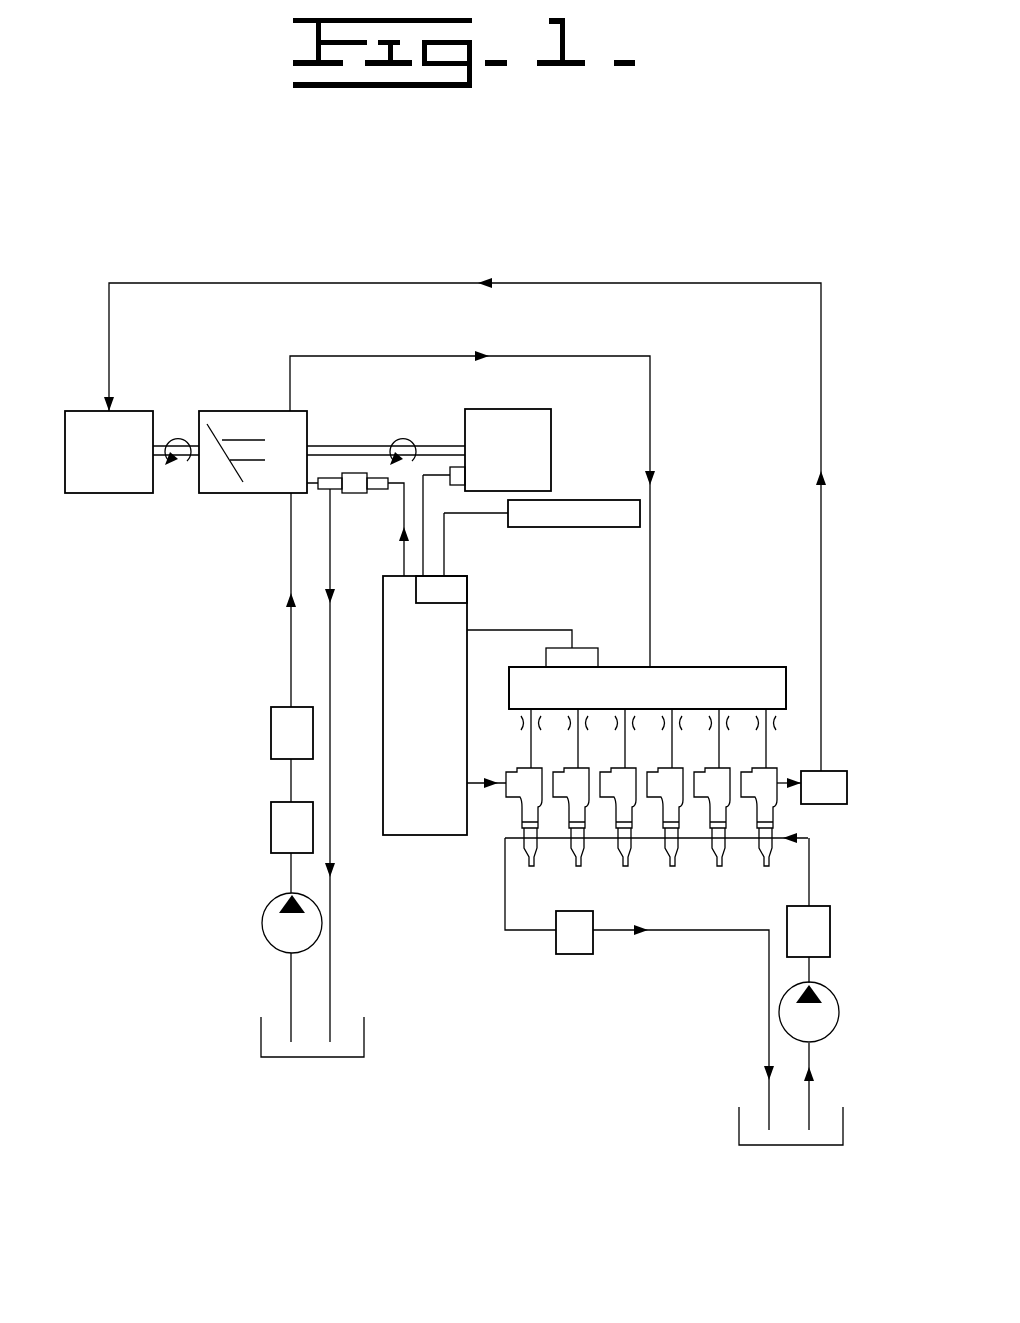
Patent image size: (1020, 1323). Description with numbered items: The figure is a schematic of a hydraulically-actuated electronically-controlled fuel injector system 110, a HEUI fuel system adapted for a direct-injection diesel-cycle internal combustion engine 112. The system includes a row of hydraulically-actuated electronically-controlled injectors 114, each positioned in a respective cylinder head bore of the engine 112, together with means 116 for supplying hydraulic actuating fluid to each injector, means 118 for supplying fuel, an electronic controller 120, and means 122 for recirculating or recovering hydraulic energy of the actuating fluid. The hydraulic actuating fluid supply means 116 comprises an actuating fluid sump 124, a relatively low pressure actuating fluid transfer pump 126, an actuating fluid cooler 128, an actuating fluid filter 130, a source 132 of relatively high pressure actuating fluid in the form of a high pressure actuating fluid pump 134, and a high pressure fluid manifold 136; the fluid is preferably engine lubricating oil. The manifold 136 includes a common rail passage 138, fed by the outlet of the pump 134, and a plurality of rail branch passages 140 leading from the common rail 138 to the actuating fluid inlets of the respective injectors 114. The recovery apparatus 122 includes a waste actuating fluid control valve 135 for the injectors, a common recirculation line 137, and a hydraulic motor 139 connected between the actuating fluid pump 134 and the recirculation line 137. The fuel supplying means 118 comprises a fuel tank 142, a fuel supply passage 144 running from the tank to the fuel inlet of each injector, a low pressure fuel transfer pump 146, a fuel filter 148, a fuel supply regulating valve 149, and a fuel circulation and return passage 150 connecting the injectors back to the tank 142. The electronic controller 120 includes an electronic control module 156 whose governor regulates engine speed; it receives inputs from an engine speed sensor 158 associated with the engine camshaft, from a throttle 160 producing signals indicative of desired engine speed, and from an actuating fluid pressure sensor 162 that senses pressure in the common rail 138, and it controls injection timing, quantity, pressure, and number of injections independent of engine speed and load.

The hydraulically-actuated electronically-controlled fuel injector system 110 is at (597, 212).
The internal combustion engine 112 is at (552, 412).
The hydraulically-actuated electronically-controlled injectors 114 is at (776, 768).
The means for supplying hydraulic actuating fluid 116 is at (320, 1082).
The means for supplying fuel 118 is at (786, 1168).
The electronic controller 120 is at (421, 858).
The means for recirculating or recovering hydraulic energy 122 is at (86, 396).
The actuating fluid sump 124 is at (261, 1030).
The actuating fluid transfer pump 126 is at (263, 925).
The actuating fluid cooler 128 is at (271, 822).
The actuating fluid filter 130 is at (271, 725).
The means for generating relatively high pressure actuating fluid 132 is at (225, 517).
The high pressure actuating fluid pump 134 is at (253, 411).
The waste actuating fluid control valve 135 is at (807, 799).
The high pressure fluid manifold 136 is at (672, 668).
The common recirculation line 137 is at (570, 283).
The common rail passage 138 is at (735, 690).
The hydraulic motor 139 is at (90, 459).
The rail branch passages 140 is at (531, 738).
The fuel tank 142 is at (739, 1115).
The fuel supply passage 144 is at (812, 1060).
The fuel transfer pump 146 is at (840, 1000).
The fuel filter 148 is at (832, 920).
The fuel supply regulating valve 149 is at (556, 946).
The fuel circulation and return passage 150 is at (769, 968).
The electronic control module 156 is at (388, 845).
The engine speed sensor 158 is at (462, 476).
The throttle 160 is at (565, 500).
The actuating fluid pressure sensor 162 is at (575, 648).